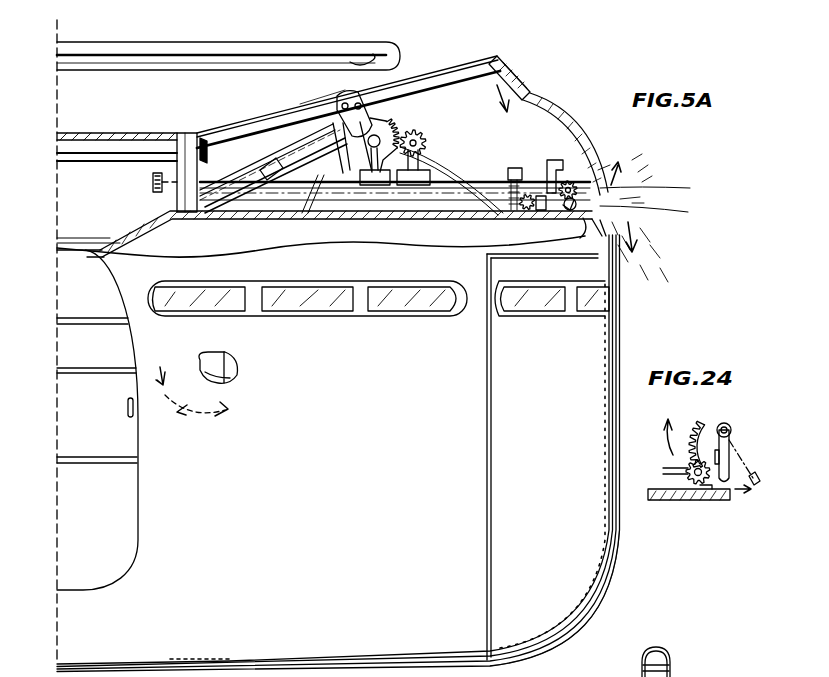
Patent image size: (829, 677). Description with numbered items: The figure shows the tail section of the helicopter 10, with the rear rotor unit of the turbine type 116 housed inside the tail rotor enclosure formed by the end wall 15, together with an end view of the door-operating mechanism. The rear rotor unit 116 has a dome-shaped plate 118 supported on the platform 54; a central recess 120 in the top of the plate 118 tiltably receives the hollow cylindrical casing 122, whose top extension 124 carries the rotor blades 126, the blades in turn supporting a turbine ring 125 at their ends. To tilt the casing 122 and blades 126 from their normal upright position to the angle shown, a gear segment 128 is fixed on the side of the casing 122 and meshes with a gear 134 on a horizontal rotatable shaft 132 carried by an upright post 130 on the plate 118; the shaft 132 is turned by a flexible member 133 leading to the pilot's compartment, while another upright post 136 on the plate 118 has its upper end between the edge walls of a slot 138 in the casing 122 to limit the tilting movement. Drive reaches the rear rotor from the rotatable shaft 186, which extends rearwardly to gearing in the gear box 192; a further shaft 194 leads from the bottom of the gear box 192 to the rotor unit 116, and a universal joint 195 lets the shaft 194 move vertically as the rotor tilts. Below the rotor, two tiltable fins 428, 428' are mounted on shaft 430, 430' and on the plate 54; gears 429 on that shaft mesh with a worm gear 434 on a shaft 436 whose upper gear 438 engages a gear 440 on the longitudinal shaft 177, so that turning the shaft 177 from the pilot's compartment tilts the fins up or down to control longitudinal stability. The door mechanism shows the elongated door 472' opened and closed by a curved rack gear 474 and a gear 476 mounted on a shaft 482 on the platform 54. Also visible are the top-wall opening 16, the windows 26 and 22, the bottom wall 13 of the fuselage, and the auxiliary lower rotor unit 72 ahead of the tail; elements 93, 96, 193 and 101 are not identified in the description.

In FIG. 5A, the boom 93 is at (192, 42).
In FIG. 5A, the boom end 96 is at (348, 60).
In FIG. 5A, the rotatable shaft 186 is at (105, 160).
In FIG. 5A, the gear box 192 is at (185, 135).
In FIG. 5A, the turbine ring 125 is at (203, 138).
In FIG. 5A, the bolt 193 is at (142, 194).
In FIG. 5A, the rotor blades 126 is at (236, 128).
In FIG. 5A, the rear rotor unit 116 is at (437, 56).
In FIG. 5A, the slot 138 is at (315, 112).
In FIG. 5A, the auxiliary lower rotor unit 72 is at (512, 66).
In FIG. 5A, the end wall (tail rotor enclosure) 15 is at (538, 108).
In FIG. 5A, the hollow cylindrical casing 122 is at (328, 150).
In FIG. 5A, the shaft 194 is at (248, 182).
In FIG. 5A, the universal joint 195 is at (268, 150).
In FIG. 5A, the central recess 120 is at (325, 168).
In FIG. 5A, the extension 124 is at (353, 94).
In FIG. 5A, the gear segment 128 is at (392, 120).
In FIG. 5A, the horizontal rotatable shaft 132 is at (428, 138).
In FIG. 5A, the gear 134 is at (420, 138).
In FIG. 5A, the flexible member 133 is at (434, 148).
In FIG. 5A, the upright post 130 is at (375, 185).
In FIG. 5A, the upright post 136 is at (350, 190).
In FIG. 5A, the dome-shaped plate 118 is at (440, 172).
In FIG. 5A, the elongated door 472' is at (395, 215).
In FIG. 24, the elongated door 472' is at (754, 453).
In FIG. 5A, the gear 476 is at (490, 208).
In FIG. 24, the gear 476 is at (708, 500).
In FIG. 5A, the platform 54 is at (236, 220).
In FIG. 24, the platform 54 is at (695, 500).
In FIG. 5A, the curved rack gear 474 is at (516, 168).
In FIG. 24, the curved rack gear 474 is at (694, 422).
In FIG. 5A, the shaft 177 is at (500, 168).
In FIG. 5A, the shaft 482 is at (556, 195).
In FIG. 5A, the gear 440 is at (603, 158).
In FIG. 24, the gear 440 is at (676, 465).
In FIG. 5A, the gear 438 is at (578, 185).
In FIG. 5A, the gear 429 is at (555, 150).
In FIG. 5A, the tiltable fin 428 is at (658, 204).
In FIG. 5A, the tiltable fin 428' is at (711, 210).
In FIG. 5A, the shaft 430 is at (637, 163).
In FIG. 5A, the shaft 430' is at (619, 252).
In FIG. 5A, the worm gear 434 is at (545, 238).
In FIG. 5A, the shaft 436 is at (565, 250).
In FIG. 5A, the opening 16 is at (118, 512).
In FIG. 5A, the helicopter 10 is at (592, 355).
In FIG. 5A, the windows 26 is at (398, 316).
In FIG. 5A, the windows 22 is at (560, 316).
In FIG. 5A, the bracket 101 is at (672, 672).
In FIG. 24, the bottom wall 13 is at (730, 430).